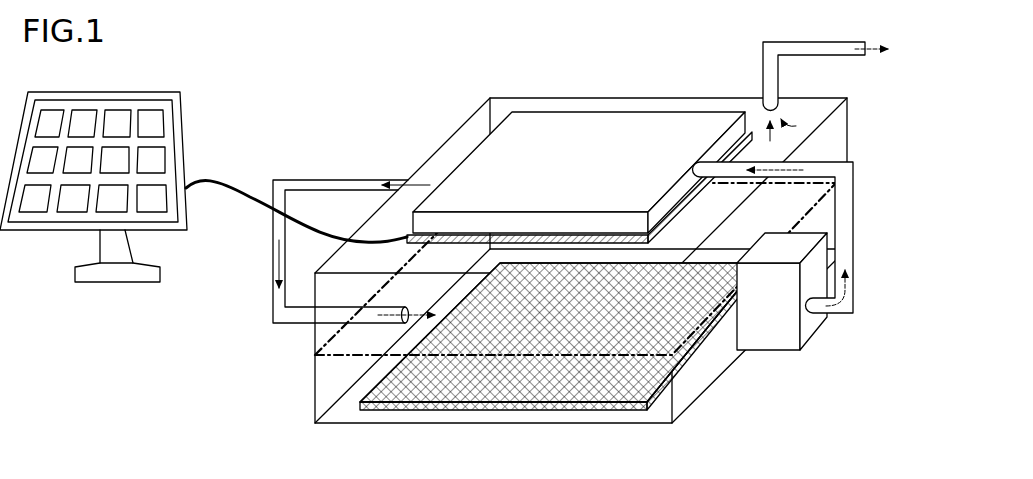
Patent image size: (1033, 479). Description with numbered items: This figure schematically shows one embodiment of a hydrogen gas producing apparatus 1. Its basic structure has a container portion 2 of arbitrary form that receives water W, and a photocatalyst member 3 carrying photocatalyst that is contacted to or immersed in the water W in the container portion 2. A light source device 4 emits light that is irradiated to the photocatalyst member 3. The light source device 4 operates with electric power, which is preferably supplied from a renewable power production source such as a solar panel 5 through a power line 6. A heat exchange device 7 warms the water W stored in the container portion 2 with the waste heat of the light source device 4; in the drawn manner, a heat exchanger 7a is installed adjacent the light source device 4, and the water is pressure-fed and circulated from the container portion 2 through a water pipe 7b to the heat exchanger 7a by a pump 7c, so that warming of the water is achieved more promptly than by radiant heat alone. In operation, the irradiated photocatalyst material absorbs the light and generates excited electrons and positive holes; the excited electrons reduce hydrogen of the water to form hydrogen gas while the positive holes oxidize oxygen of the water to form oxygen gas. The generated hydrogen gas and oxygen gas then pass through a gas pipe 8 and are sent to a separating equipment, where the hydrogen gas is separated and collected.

The hydrogen gas producing apparatus 1 is at (465, 81).
The container portion 2 is at (608, 97).
The photocatalyst member 3 is at (571, 412).
The light source device 4 is at (690, 205).
The solar panel 5 is at (182, 114).
The power line 6 is at (238, 194).
The heat exchange device 7 is at (553, 254).
The heat exchanger 7a is at (588, 170).
The water pipe 7b is at (856, 221).
The pump 7c is at (772, 352).
The gas pipe 8 is at (762, 93).
The water W is at (335, 376).